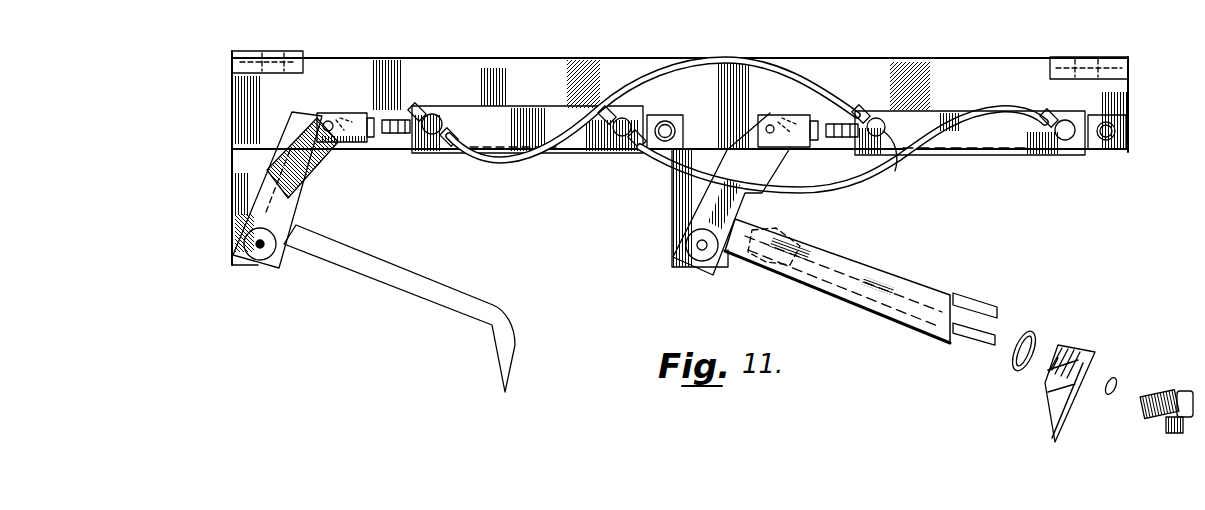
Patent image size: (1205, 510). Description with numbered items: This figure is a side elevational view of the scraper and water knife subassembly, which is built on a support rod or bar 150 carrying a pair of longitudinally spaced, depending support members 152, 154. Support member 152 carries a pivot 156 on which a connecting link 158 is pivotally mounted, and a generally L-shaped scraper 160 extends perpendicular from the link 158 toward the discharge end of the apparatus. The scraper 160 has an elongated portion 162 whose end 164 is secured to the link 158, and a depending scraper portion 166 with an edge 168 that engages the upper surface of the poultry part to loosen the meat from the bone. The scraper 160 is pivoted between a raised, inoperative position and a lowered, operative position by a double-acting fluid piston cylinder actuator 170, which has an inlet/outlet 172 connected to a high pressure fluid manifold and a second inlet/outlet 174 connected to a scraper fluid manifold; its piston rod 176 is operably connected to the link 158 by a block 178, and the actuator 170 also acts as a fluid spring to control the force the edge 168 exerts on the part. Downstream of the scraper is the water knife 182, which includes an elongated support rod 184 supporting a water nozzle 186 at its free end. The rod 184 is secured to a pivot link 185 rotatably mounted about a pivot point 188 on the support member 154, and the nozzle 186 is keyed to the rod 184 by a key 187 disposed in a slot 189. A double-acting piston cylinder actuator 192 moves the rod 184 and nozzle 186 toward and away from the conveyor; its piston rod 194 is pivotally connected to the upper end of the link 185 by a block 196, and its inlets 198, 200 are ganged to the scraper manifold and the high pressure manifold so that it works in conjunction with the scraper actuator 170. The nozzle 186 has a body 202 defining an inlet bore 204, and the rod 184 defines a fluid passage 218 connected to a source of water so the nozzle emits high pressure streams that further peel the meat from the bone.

The support rod or bar 150 is at (442, 58).
The support member 152 is at (242, 178).
The support member 154 is at (680, 200).
The pivot 156 is at (258, 262).
The connecting link 158 is at (262, 214).
The scraper 160 is at (458, 280).
The elongated portion 162 is at (395, 292).
The end 164 is at (296, 226).
The depending scraper portion 166 is at (525, 350).
The edge 168 is at (508, 393).
The double-acting fluid piston cylinder actuator 170 is at (492, 102).
The inlet/outlet 172 is at (432, 112).
The second inlet/outlet 174 is at (618, 116).
The piston rod 176 is at (393, 118).
The block 178 is at (353, 112).
The water knife 182 is at (910, 255).
The elongated support rod 184 is at (846, 254).
The pivot link 185 is at (706, 210).
The water nozzle 186 is at (1108, 326).
The key 187 is at (975, 300).
The pivot point 188 is at (700, 252).
The slot 189 is at (1077, 340).
The double-acting piston cylinder actuator 192 is at (955, 110).
The piston rod 194 is at (838, 116).
The block 196 is at (788, 115).
The inlet 198 is at (895, 171).
The inlet 200 is at (1062, 142).
The body 202 is at (1100, 353).
The inlet bore 204 is at (1042, 370).
The fluid passage 218 is at (902, 322).